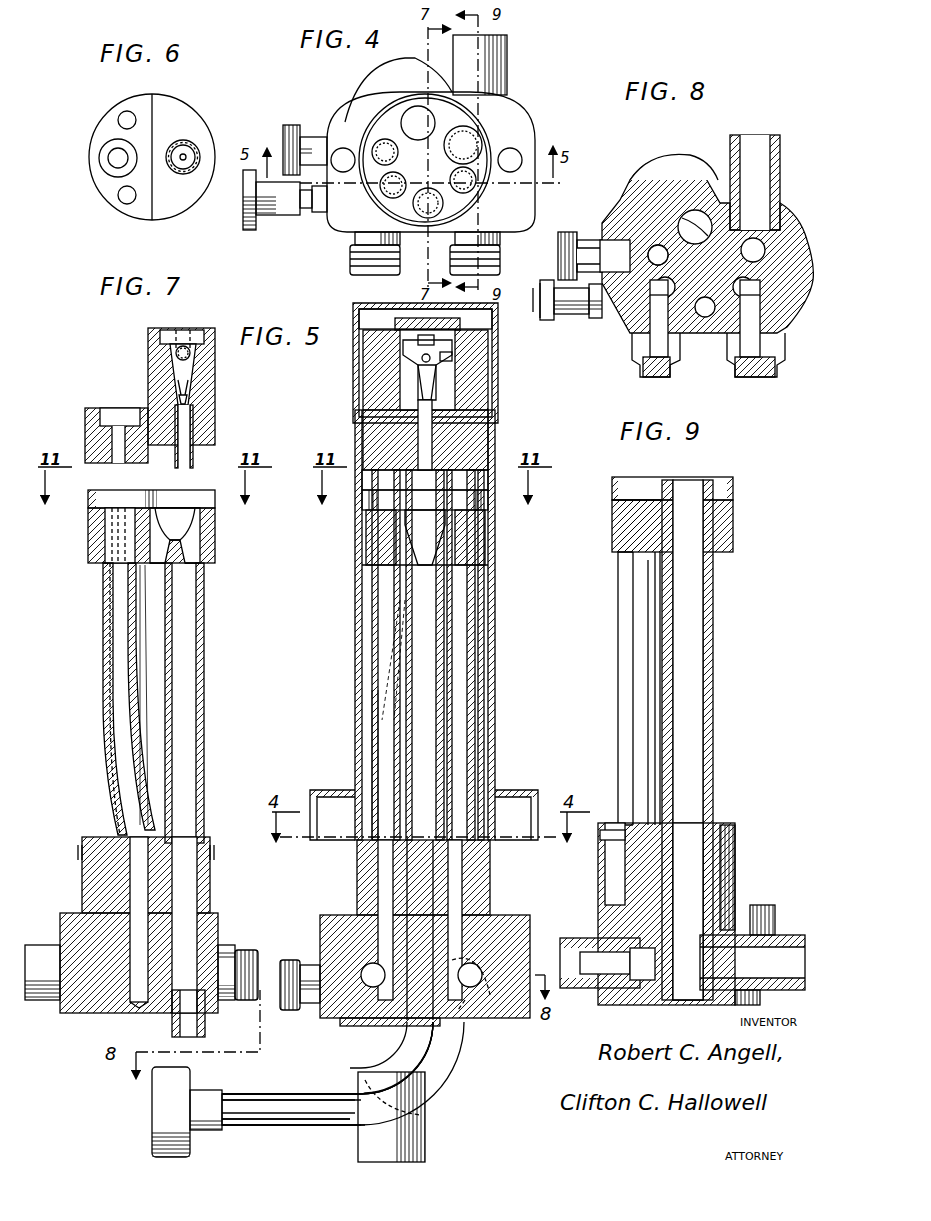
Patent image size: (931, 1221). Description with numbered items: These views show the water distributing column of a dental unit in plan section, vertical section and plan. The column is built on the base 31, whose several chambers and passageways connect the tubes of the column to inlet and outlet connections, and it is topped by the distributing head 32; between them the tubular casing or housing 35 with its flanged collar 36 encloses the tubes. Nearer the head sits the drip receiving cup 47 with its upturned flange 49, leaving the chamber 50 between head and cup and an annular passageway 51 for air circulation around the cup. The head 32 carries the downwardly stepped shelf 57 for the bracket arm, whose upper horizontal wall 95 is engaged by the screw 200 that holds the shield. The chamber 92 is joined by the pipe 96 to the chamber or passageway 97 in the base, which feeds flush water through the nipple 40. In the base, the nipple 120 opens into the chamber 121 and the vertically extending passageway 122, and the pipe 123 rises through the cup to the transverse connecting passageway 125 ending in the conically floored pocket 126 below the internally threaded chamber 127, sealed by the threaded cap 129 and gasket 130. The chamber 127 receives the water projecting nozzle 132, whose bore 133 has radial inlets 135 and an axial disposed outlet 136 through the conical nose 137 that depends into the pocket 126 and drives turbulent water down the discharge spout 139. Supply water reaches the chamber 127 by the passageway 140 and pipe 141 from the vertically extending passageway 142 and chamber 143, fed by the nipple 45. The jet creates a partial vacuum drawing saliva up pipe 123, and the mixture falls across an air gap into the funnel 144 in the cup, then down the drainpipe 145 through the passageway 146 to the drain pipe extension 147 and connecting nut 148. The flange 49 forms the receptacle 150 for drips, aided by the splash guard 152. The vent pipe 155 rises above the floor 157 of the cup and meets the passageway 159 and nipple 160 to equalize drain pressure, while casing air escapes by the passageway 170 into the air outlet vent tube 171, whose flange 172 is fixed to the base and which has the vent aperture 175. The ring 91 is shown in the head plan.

In FIG. 4, the base 31 is at (520, 125).
In FIG. 7, the base 31 is at (218, 925).
In FIG. 5, the base 31 is at (330, 930).
In FIG. 9, the base 31 is at (735, 862).
In FIG. 6, the distributing head 32 is at (188, 118).
In FIG. 7, the distributing head 32 is at (148, 396).
In FIG. 5, the distributing head 32 is at (445, 410).
In FIG. 5, the tubular casing or housing 35 is at (355, 642).
In FIG. 5, the flanged collar 36 is at (535, 782).
In FIG. 4, the nipple 40 is at (292, 124).
In FIG. 8, the nipple 40 is at (562, 232).
In FIG. 5, the nipple 40 is at (292, 1010).
In FIG. 4, the nipple 45 is at (500, 247).
In FIG. 8, the nipple 45 is at (770, 378).
In FIG. 7, the nipple 45 is at (242, 1000).
In FIG. 9, the nipple 45 is at (572, 938).
In FIG. 7, the drip receiving cup 47 is at (90, 545).
In FIG. 5, the drip receiving cup 47 is at (485, 535).
In FIG. 9, the drip receiving cup 47 is at (733, 528).
In FIG. 7, the upturned flange 49 is at (88, 505).
In FIG. 5, the upturned flange 49 is at (365, 500).
In FIG. 9, the upturned flange 49 is at (733, 488).
In FIG. 5, the chamber 50 is at (365, 480).
In FIG. 5, the passageway 51 is at (490, 560).
In FIG. 6, the downwardly stepped shelf 57 is at (133, 214).
In FIG. 7, the downwardly stepped shelf 57 is at (90, 408).
In FIG. 6, the ring 91 is at (110, 172).
In FIG. 6, the chamber 92 is at (108, 158).
In FIG. 5, the upper horizontal wall 95 is at (470, 322).
In FIG. 4, the pipe 96 is at (375, 142).
In FIG. 7, the pipe 96 is at (103, 648).
In FIG. 5, the pipe 96 is at (370, 790).
In FIG. 8, the chamber or passageway 97 is at (640, 245).
In FIG. 7, the chamber or passageway 97 is at (135, 887).
In FIG. 4, the nipple 120 is at (350, 266).
In FIG. 8, the nipple 120 is at (638, 378).
In FIG. 8, the chamber 121 is at (596, 318).
In FIG. 5, the chamber 121 is at (368, 970).
In FIG. 8, the vertically extending passageway 122 is at (580, 313).
In FIG. 5, the vertically extending passageway 122 is at (380, 893).
In FIG. 4, the pipe 123 is at (385, 195).
In FIG. 5, the pipe 123 is at (372, 708).
In FIG. 5, the transverse connecting passageway 125 is at (380, 395).
In FIG. 5, the conically floored pocket 126 is at (438, 385).
In FIG. 6, the internally threaded chamber 127 is at (195, 170).
In FIG. 7, the internally threaded chamber 127 is at (162, 345).
In FIG. 5, the internally threaded chamber 127 is at (363, 360).
In FIG. 5, the threaded cap 129 is at (430, 310).
In FIG. 5, the gasket 130 is at (400, 345).
In FIG. 6, the water projecting nozzle 132 is at (196, 150).
In FIG. 7, the water projecting nozzle 132 is at (200, 372).
In FIG. 5, the water projecting nozzle 132 is at (410, 365).
In FIG. 6, the bore 133 is at (190, 170).
In FIG. 7, the bore 133 is at (175, 375).
In FIG. 6, the radial inlets 135 is at (182, 140).
In FIG. 7, the radial inlets 135 is at (185, 345).
In FIG. 6, the axial disposed outlet 136 is at (182, 175).
In FIG. 7, the axial disposed outlet 136 is at (190, 402).
In FIG. 7, the conical nose 137 is at (190, 392).
In FIG. 7, the discharge spout 139 is at (193, 455).
In FIG. 5, the discharge spout 139 is at (435, 460).
In FIG. 5, the passageway 140 is at (455, 360).
In FIG. 4, the pipe 141 is at (478, 183).
In FIG. 5, the pipe 141 is at (480, 697).
In FIG. 9, the pipe 141 is at (640, 730).
In FIG. 8, the vertically extending passageway 142 is at (780, 325).
In FIG. 9, the vertically extending passageway 142 is at (612, 885).
In FIG. 8, the chamber 143 is at (728, 370).
In FIG. 5, the chamber 143 is at (478, 987).
In FIG. 9, the chamber 143 is at (632, 1003).
In FIG. 7, the funnel 144 is at (190, 523).
In FIG. 5, the funnel 144 is at (420, 540).
In FIG. 4, the drainpipe 145 is at (427, 220).
In FIG. 7, the drainpipe 145 is at (204, 705).
In FIG. 5, the drainpipe 145 is at (445, 668).
In FIG. 9, the drainpipe 145 is at (618, 685).
In FIG. 8, the passageway 146 is at (670, 350).
In FIG. 7, the passageway 146 is at (200, 900).
In FIG. 5, the passageway 146 is at (428, 910).
In FIG. 4, the drain pipe extension 147 is at (292, 215).
In FIG. 8, the drain pipe extension 147 is at (566, 320).
In FIG. 7, the drain pipe extension 147 is at (172, 1028).
In FIG. 5, the drain pipe extension 147 is at (280, 1120).
In FIG. 5, the connecting nut 148 is at (160, 1112).
In FIG. 7, the receptacle 150 is at (215, 500).
In FIG. 9, the receptacle 150 is at (612, 488).
In FIG. 5, the splash guard 152 is at (465, 888).
In FIG. 4, the vent pipe 155 is at (480, 142).
In FIG. 7, the vent pipe 155 is at (112, 782).
In FIG. 9, the vent pipe 155 is at (713, 718).
In FIG. 9, the floor 157 is at (640, 485).
In FIG. 8, the passageway 159 is at (752, 235).
In FIG. 9, the passageway 159 is at (685, 970).
In FIG. 4, the nipple 160 is at (505, 68).
In FIG. 8, the nipple 160 is at (757, 140).
In FIG. 7, the nipple 160 is at (45, 1000).
In FIG. 9, the nipple 160 is at (787, 935).
In FIG. 4, the passageway 170 is at (405, 120).
In FIG. 8, the air outlet vent tube 171 is at (640, 170).
In FIG. 5, the air outlet vent tube 171 is at (432, 1095).
In FIG. 4, the flange 172 is at (370, 66).
In FIG. 5, the flange 172 is at (358, 1026).
In FIG. 5, the vent aperture 175 is at (430, 1140).
In FIG. 4, the screw 200 is at (385, 280).